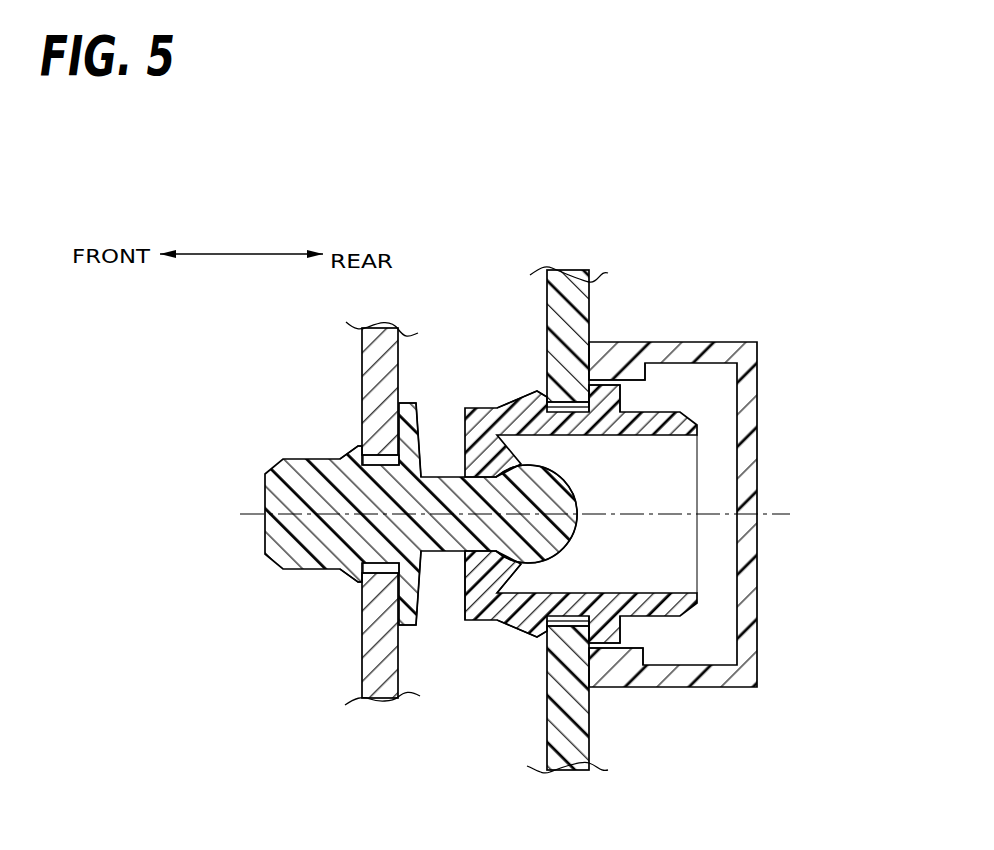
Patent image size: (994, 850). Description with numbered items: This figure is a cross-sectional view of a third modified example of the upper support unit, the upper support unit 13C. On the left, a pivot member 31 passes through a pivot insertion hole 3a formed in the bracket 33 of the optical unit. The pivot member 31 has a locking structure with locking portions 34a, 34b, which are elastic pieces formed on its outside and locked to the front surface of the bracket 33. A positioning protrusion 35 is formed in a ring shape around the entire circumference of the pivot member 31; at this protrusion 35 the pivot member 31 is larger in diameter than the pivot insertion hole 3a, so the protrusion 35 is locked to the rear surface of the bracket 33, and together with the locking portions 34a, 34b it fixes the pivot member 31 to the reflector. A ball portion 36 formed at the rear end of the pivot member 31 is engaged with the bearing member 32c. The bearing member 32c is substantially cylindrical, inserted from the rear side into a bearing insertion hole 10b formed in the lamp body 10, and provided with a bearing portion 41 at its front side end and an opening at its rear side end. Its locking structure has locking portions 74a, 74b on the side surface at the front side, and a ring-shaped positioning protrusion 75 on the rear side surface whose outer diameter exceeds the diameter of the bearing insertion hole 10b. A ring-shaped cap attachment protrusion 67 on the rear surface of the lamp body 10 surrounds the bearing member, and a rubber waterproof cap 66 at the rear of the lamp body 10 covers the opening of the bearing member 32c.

The pivot member 31 is at (288, 458).
The locking portion 34a is at (340, 573).
The locking portion 34b is at (347, 453).
The bracket 33 is at (360, 638).
The pivot insertion hole 3a is at (367, 633).
The positioning protrusion 35 is at (420, 605).
The ball portion 36 is at (573, 482).
The bearing portion 41 is at (465, 590).
The bearing member 32c is at (497, 411).
The locking portion 74a is at (523, 628).
The locking portion 74b is at (530, 393).
The lamp body 10 is at (557, 722).
The bearing insertion hole 10b is at (528, 636).
The upper support unit 13C is at (717, 491).
The waterproof cap 66 is at (757, 613).
The cap attachment protrusion 67 is at (630, 660).
The positioning protrusion 75 is at (603, 405).